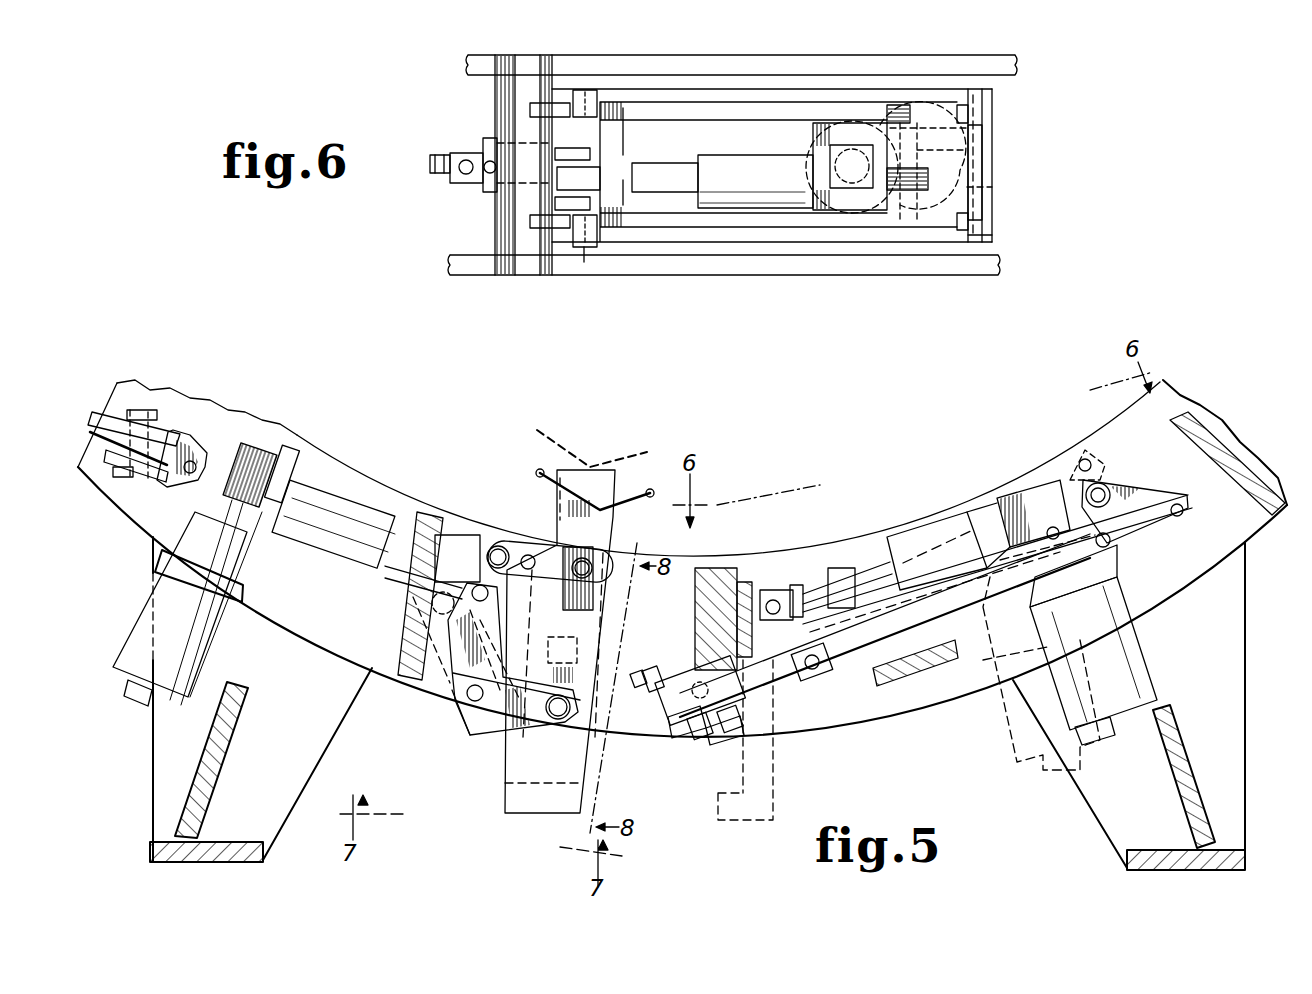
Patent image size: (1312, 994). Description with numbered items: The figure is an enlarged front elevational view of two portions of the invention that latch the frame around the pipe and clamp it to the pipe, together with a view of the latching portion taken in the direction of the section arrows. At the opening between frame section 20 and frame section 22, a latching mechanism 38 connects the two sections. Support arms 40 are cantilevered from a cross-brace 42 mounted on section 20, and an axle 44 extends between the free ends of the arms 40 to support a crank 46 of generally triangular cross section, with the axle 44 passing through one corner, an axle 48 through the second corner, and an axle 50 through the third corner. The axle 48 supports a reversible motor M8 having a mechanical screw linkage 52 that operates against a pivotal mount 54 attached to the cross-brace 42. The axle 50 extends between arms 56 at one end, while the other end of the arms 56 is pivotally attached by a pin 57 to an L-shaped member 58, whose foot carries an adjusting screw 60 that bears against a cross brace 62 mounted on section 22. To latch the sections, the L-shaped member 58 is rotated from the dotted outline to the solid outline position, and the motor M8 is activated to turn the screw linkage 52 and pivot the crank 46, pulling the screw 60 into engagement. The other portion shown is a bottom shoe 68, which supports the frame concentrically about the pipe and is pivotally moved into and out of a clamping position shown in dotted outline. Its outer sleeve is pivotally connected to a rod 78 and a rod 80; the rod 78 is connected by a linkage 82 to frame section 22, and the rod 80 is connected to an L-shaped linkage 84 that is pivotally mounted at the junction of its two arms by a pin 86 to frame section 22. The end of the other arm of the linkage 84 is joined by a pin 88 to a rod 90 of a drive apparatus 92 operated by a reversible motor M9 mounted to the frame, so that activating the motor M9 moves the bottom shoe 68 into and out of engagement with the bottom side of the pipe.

In FIG. 6, the section 20 is at (694, 55).
In FIG. 5, the section 20 is at (1260, 518).
In FIG. 6, the section 22 is at (484, 55).
In FIG. 5, the section 22 is at (380, 482).
In FIG. 6, the latching mechanism 38 is at (1002, 91).
In FIG. 5, the latching mechanism 38 is at (926, 509).
In FIG. 6, the support arms 40 is at (530, 102).
In FIG. 5, the support arms 40 is at (858, 676).
In FIG. 5, the cross-brace 42 is at (728, 558).
In FIG. 6, the axle 44 is at (990, 130).
In FIG. 5, the axle 44 is at (1106, 544).
In FIG. 6, the crank 46 is at (990, 133).
In FIG. 5, the crank 46 is at (1138, 502).
In FIG. 6, the axle 48 is at (990, 192).
In FIG. 5, the axle 48 is at (1108, 486).
In FIG. 6, the axle 50 is at (986, 197).
In FIG. 5, the axle 50 is at (1184, 502).
In FIG. 6, the mechanical screw linkage 52 is at (699, 156).
In FIG. 5, the mechanical screw linkage 52 is at (1150, 540).
In FIG. 5, the pivotal mount 54 is at (774, 588).
In FIG. 6, the arms 56 is at (776, 90).
In FIG. 6, the pin 57 is at (592, 248).
In FIG. 5, the pin 57 is at (814, 694).
In FIG. 6, the L-shaped member 58 is at (490, 196).
In FIG. 5, the L-shaped member 58 is at (674, 718).
In FIG. 6, the adjusting screw 60 is at (444, 176).
In FIG. 5, the adjusting screw 60 is at (656, 677).
In FIG. 6, the cross brace 62 is at (494, 224).
In FIG. 5, the cross brace 62 is at (692, 614).
In FIG. 5, the bottom shoe 68 is at (534, 480).
In FIG. 5, the rod 78 is at (618, 573).
In FIG. 5, the rod 80 is at (583, 712).
In FIG. 5, the linkage 82 is at (540, 548).
In FIG. 5, the L-shaped linkage 84 is at (470, 730).
In FIG. 5, the pin 86 is at (456, 710).
In FIG. 5, the pin 88 is at (494, 564).
In FIG. 5, the rod 90 is at (422, 602).
In FIG. 5, the drive apparatus 92 is at (338, 494).
In FIG. 5, the reversible motor M8 is at (1144, 632).
In FIG. 5, the reversible motor M9 is at (210, 634).